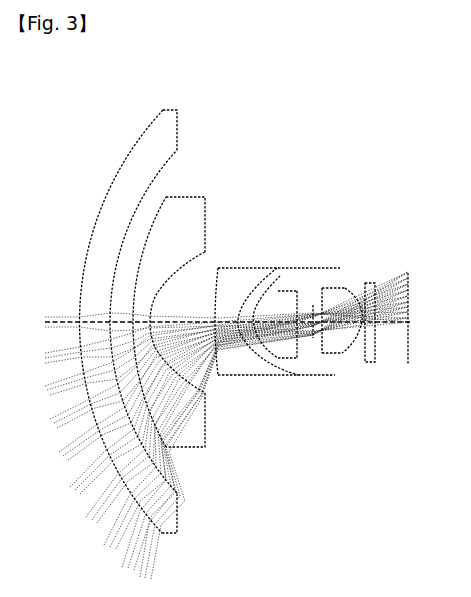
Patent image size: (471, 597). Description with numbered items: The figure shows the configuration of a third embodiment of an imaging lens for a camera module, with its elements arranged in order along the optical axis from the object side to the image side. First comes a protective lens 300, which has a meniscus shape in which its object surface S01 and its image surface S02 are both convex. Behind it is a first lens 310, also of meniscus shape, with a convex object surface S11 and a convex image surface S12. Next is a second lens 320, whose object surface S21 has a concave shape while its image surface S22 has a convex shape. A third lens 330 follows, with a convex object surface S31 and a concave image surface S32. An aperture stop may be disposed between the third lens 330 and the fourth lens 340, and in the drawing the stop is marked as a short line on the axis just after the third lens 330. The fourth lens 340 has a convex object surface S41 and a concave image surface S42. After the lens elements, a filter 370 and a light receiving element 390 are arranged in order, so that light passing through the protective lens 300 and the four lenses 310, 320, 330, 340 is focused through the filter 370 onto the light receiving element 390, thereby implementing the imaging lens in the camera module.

The protective lens 300 is at (141, 329).
The first lens 310 is at (182, 334).
The second lens 320 is at (280, 326).
The third lens 330 is at (281, 325).
The fourth lens 340 is at (339, 316).
The filter 370 is at (368, 363).
The light receiving element 390 is at (408, 366).
The object surface of the protective lens S01 is at (149, 118).
The image surface of the protective lens S02 is at (178, 130).
The object surface of the first lens S11 is at (166, 197).
The image surface of the first lens S12 is at (205, 205).
The object surface of the second lens S21 is at (216, 266).
The image surface of the second lens S22 is at (340, 268).
The object surface of the third lens S31 is at (280, 276).
The image surface of the third lens S32 is at (297, 290).
The object surface of the fourth lens S41 is at (313, 303).
The image surface of the fourth lens S42 is at (347, 288).
The aperture stop is at (311, 328).